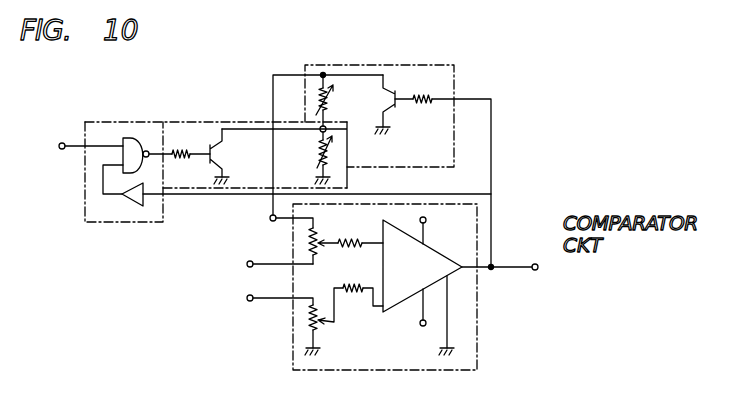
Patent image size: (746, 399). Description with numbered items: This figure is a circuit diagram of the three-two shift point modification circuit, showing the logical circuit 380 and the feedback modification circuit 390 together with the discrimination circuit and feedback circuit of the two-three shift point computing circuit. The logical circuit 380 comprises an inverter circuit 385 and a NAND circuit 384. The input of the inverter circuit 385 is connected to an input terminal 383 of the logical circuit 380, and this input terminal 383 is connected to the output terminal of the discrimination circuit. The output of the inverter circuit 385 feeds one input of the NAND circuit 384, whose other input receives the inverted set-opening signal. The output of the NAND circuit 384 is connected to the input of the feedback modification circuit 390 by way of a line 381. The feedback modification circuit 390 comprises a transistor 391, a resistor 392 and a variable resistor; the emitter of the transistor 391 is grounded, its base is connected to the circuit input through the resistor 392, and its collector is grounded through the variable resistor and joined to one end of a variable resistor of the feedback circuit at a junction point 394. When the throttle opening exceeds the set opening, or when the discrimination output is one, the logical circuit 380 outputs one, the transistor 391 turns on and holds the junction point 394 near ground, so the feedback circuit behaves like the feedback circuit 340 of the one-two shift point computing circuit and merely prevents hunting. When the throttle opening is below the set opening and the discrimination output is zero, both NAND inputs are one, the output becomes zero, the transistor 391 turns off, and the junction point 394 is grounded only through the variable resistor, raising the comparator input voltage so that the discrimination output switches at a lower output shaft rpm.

The logical circuit 380 is at (83, 133).
The line 381 is at (151, 121).
The NAND circuit 384 is at (130, 139).
The inverter circuit 385 is at (121, 197).
The resistor 392 is at (178, 149).
The transistor 391 is at (213, 141).
The input terminal 383 is at (182, 197).
The feedback modification circuit 390 is at (262, 121).
The junction point 394 is at (327, 131).
The feedback circuit 340 is at (108, 398).